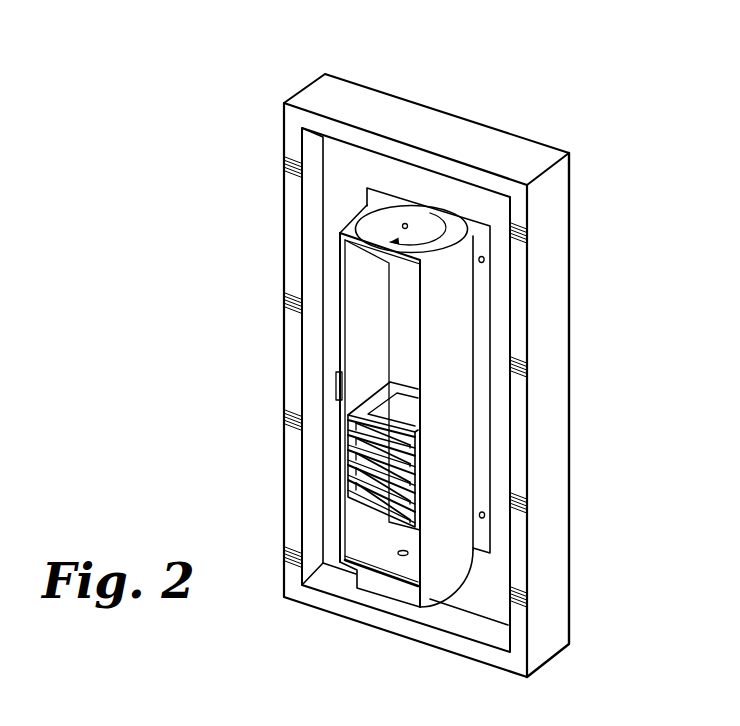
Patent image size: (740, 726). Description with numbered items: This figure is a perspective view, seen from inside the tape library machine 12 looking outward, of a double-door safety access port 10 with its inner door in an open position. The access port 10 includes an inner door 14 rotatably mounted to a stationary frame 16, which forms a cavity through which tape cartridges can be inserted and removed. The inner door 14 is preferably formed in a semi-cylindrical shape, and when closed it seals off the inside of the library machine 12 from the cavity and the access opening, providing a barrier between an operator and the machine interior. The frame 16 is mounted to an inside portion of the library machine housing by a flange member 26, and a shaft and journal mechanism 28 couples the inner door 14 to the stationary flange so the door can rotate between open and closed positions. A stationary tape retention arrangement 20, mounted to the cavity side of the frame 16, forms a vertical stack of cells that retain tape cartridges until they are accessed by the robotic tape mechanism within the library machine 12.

The double-door safety access port 10 is at (242, 87).
The automated tape library machine 12 is at (285, 268).
The inner door 14 is at (467, 337).
The stationary frame 16 is at (341, 342).
The stationary tape retention arrangement 20 is at (341, 454).
The flange member 26 is at (490, 268).
The shaft and journal mechanism 28 is at (406, 228).